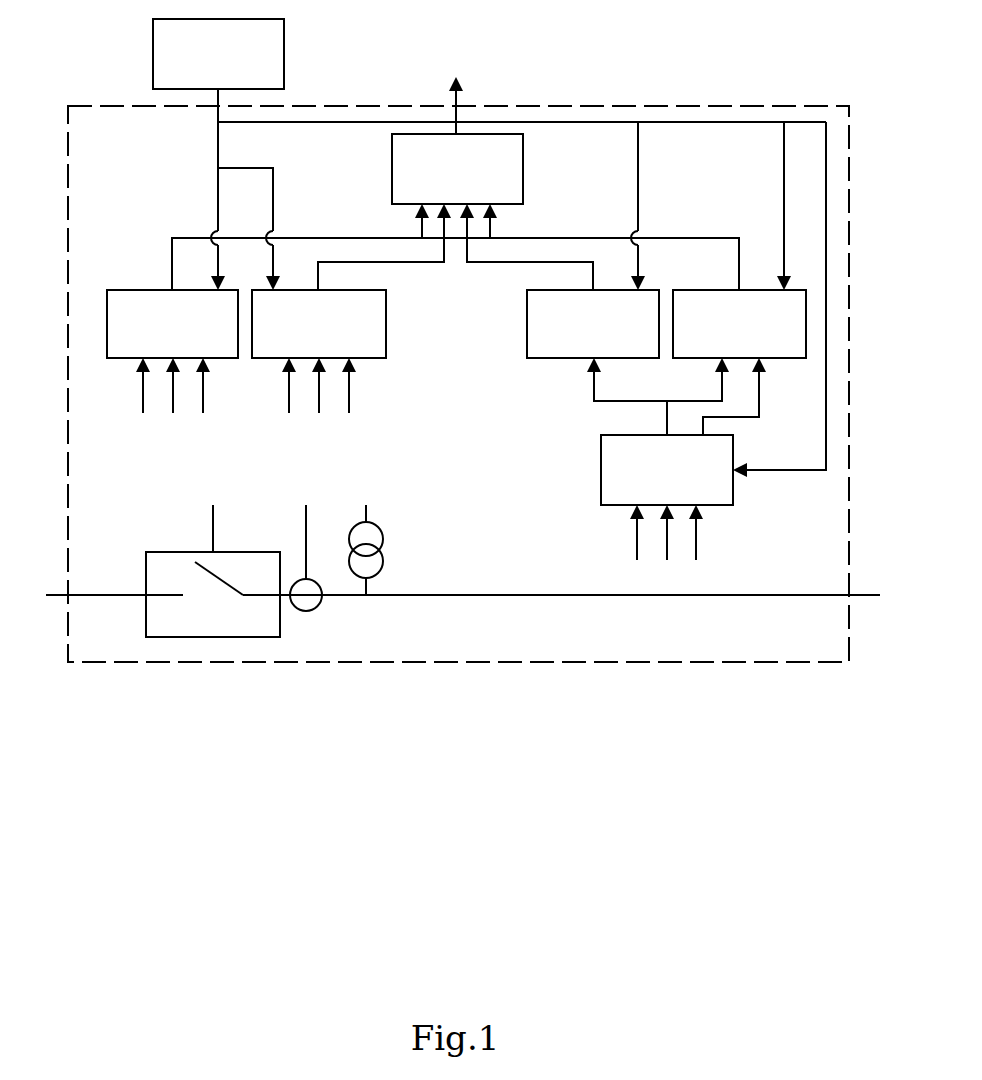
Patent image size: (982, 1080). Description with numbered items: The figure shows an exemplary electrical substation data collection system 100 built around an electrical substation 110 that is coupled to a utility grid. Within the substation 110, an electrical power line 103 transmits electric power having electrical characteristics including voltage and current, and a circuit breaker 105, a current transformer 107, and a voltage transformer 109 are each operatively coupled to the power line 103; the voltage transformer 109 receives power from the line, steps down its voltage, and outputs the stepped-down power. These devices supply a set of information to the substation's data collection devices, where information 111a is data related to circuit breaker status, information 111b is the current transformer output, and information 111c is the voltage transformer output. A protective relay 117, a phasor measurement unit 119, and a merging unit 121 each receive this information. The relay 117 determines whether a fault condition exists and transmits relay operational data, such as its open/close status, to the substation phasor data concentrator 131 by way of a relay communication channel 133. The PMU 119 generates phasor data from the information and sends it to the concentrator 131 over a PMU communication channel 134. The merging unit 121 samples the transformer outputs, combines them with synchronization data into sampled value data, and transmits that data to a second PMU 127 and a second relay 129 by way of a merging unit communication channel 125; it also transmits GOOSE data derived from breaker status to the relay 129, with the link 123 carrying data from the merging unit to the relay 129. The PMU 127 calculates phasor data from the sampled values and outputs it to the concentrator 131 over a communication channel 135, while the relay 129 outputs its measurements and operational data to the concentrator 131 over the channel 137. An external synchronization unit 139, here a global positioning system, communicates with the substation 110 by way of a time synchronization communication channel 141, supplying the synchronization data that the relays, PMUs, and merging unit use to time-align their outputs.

The electrical substation data collection system 100 is at (708, 676).
The electrical power line 103 is at (503, 595).
The circuit breaker 105 is at (280, 622).
The current transformer 107 is at (313, 580).
The voltage transformer 109 is at (383, 558).
The electrical substation 110 is at (740, 106).
The circuit breaker status information 111a is at (143, 385).
The current transformer output information 111b is at (173, 405).
The voltage transformer output information 111c is at (203, 383).
The protective relay 117 is at (122, 290).
The phasor measurement unit 119 is at (386, 335).
The merging unit 121 is at (601, 445).
The merging unit to relay link 123 is at (759, 385).
The merging unit communication channel 125 is at (594, 383).
The phasor measurement unit 127 is at (527, 335).
The relay 129 is at (685, 290).
The substation phasor data concentrator 131 is at (523, 143).
The relay communication channel 133 is at (183, 238).
The PMU communication channel 134 is at (427, 262).
The communication channel 135 is at (487, 262).
The second relay to PDC communication link 137 is at (722, 238).
The external synchronization unit 139 is at (284, 28).
The time synchronization communication channel 141 is at (218, 145).